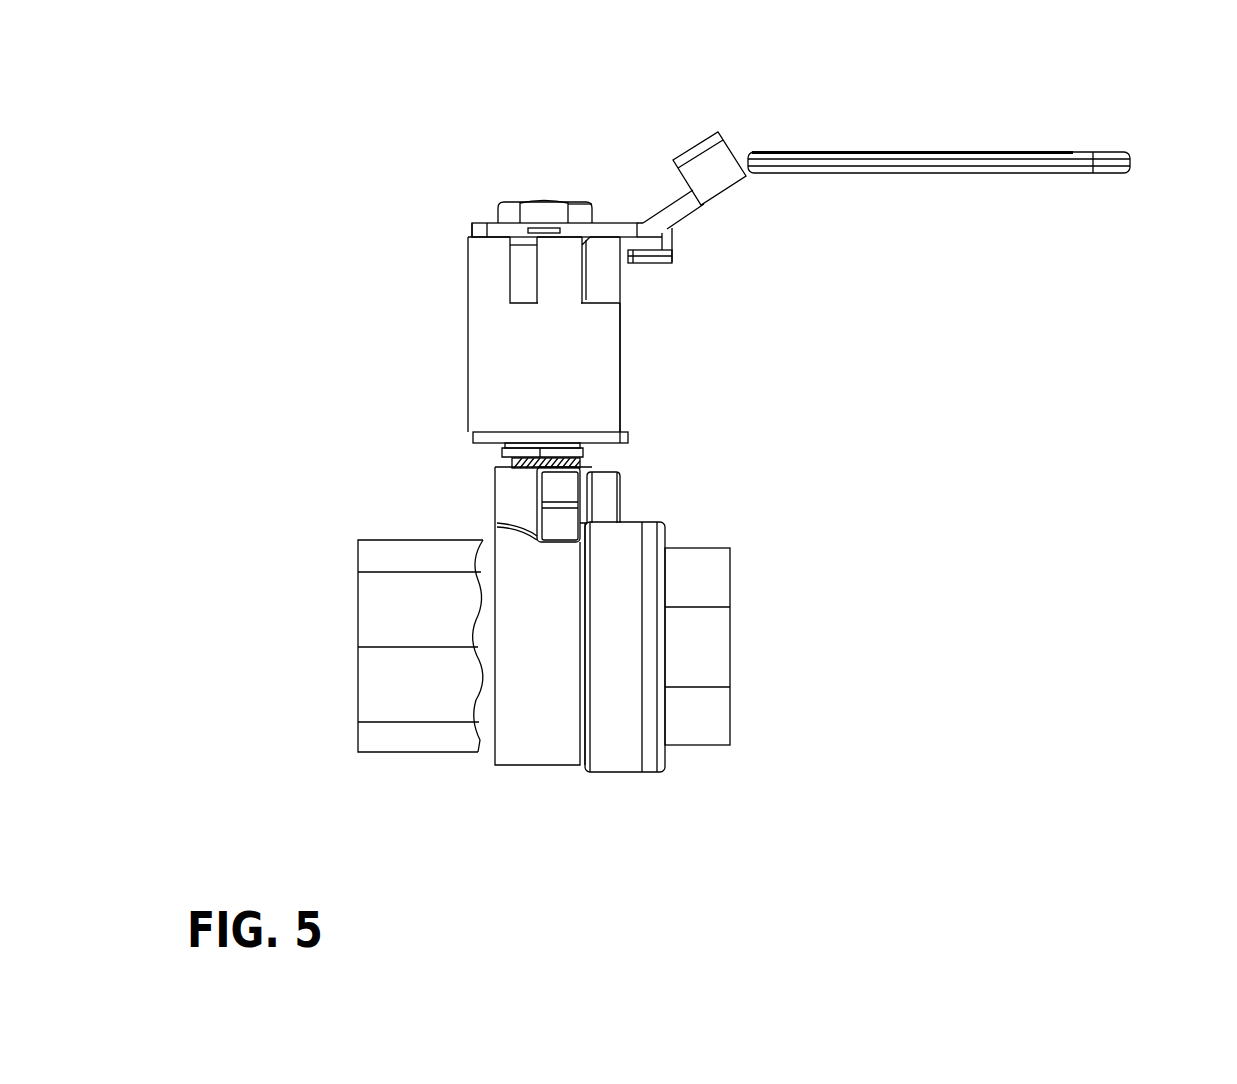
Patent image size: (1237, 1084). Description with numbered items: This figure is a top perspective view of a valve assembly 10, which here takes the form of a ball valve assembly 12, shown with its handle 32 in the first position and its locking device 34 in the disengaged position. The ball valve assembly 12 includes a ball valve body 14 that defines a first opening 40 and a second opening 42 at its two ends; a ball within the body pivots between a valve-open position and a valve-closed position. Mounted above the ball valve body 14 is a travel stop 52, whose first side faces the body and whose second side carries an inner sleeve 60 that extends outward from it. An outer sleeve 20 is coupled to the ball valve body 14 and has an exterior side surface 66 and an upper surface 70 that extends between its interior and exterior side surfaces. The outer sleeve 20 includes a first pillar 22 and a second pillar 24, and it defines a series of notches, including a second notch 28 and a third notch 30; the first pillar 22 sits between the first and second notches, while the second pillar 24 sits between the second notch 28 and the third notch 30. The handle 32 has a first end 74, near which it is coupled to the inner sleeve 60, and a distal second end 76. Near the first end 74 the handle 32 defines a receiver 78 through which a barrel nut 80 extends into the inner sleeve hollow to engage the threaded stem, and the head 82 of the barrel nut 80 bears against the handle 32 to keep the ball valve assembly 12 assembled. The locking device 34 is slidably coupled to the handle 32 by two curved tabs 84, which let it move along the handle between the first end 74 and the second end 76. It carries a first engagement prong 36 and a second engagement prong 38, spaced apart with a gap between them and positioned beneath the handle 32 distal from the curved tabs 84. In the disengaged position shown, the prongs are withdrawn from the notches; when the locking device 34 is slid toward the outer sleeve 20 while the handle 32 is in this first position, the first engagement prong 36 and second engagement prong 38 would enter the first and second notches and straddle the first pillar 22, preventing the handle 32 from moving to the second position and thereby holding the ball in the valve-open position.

The valve assembly 10 is at (357, 158).
The ball valve assembly 12 is at (403, 160).
The ball valve body 14 is at (535, 715).
The outer sleeve 20 is at (538, 277).
The first pillar 22 is at (605, 252).
The second pillar 24 is at (567, 280).
The second notch 28 is at (592, 290).
The third notch 30 is at (510, 288).
The handle 32 is at (905, 150).
The locking device 34 is at (702, 208).
The first engagement prong 36 is at (639, 262).
The second engagement prong 38 is at (675, 262).
The first opening 40 is at (740, 667).
The second opening 42 is at (357, 662).
The travel stop 52 is at (470, 437).
The inner sleeve 60 is at (525, 270).
The exterior side surface 66 is at (620, 343).
The upper surface 70 is at (488, 237).
The first end 74 is at (472, 223).
The second end 76 is at (1133, 160).
The receiver 78 is at (533, 220).
The barrel nut 80 is at (543, 197).
The head 82 is at (560, 217).
The curved tabs 84 is at (702, 143).